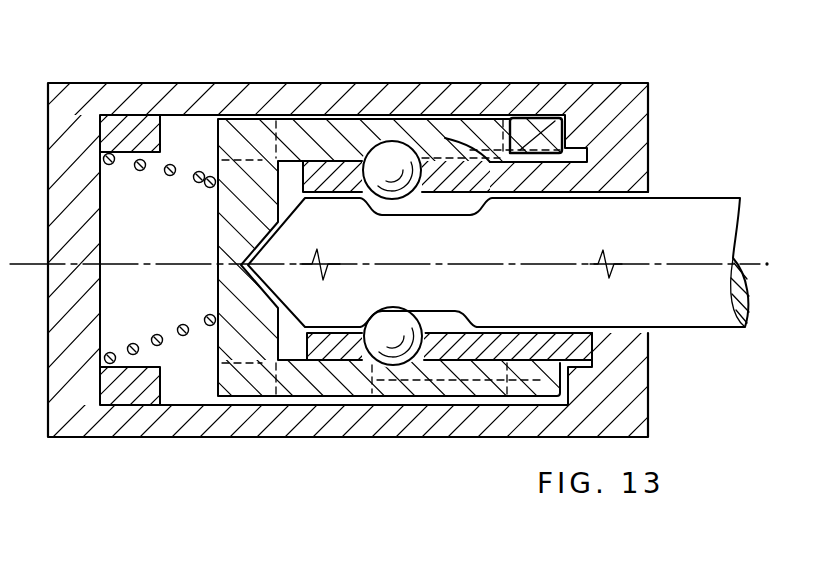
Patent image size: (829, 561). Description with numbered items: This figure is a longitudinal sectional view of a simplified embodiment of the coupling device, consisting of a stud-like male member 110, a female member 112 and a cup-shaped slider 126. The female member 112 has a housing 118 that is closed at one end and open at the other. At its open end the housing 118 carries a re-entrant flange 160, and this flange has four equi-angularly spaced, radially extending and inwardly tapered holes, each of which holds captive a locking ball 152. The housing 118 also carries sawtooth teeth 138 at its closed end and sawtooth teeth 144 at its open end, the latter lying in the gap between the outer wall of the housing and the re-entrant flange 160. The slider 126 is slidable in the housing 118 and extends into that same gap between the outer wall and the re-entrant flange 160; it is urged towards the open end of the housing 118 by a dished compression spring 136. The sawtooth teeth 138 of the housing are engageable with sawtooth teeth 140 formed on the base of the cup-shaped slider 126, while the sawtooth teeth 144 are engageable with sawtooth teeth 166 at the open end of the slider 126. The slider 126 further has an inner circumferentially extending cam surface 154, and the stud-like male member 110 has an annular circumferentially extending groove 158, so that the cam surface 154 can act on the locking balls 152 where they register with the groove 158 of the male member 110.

The stud-like male member 110 is at (688, 213).
The female member 112 is at (328, 442).
The housing 118 is at (258, 410).
The cup-shaped slider 126 is at (460, 387).
The dished compression spring 136 is at (172, 168).
The sawtooth teeth 138 is at (138, 123).
The sawtooth teeth 140 is at (243, 378).
The sawtooth teeth 144 is at (506, 133).
The locking ball 152 is at (392, 160).
The cam surface 154 is at (449, 137).
The annular groove 158 is at (447, 311).
The re-entrant flange 160 is at (521, 347).
The sawtooth teeth 166 is at (544, 133).